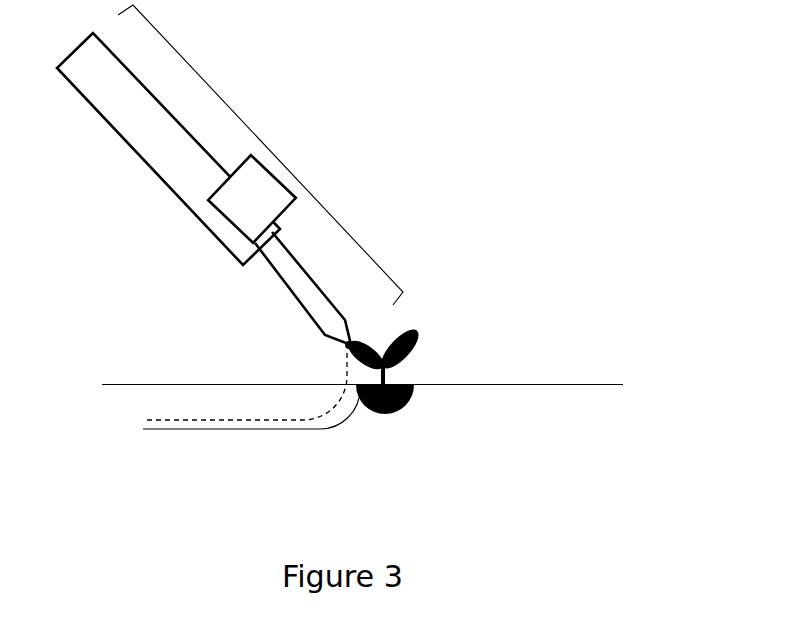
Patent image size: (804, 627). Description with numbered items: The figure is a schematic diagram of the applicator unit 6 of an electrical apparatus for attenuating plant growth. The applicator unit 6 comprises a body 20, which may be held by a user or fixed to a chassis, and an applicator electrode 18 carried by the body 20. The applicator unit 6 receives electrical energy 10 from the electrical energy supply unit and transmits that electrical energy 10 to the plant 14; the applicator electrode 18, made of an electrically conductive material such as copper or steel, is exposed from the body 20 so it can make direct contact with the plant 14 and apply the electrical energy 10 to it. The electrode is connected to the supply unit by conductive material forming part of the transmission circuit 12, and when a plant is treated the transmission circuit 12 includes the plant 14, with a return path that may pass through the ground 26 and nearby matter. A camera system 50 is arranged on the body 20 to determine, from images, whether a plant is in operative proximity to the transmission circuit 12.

The applicator unit 6 is at (268, 147).
The electrical energy 10 is at (183, 420).
The transmission circuit 12 is at (233, 430).
The plant 14 is at (418, 330).
The applicator electrode 18 is at (297, 287).
The body 20 is at (158, 138).
The ground 26 is at (593, 384).
The camera system 50 is at (252, 199).